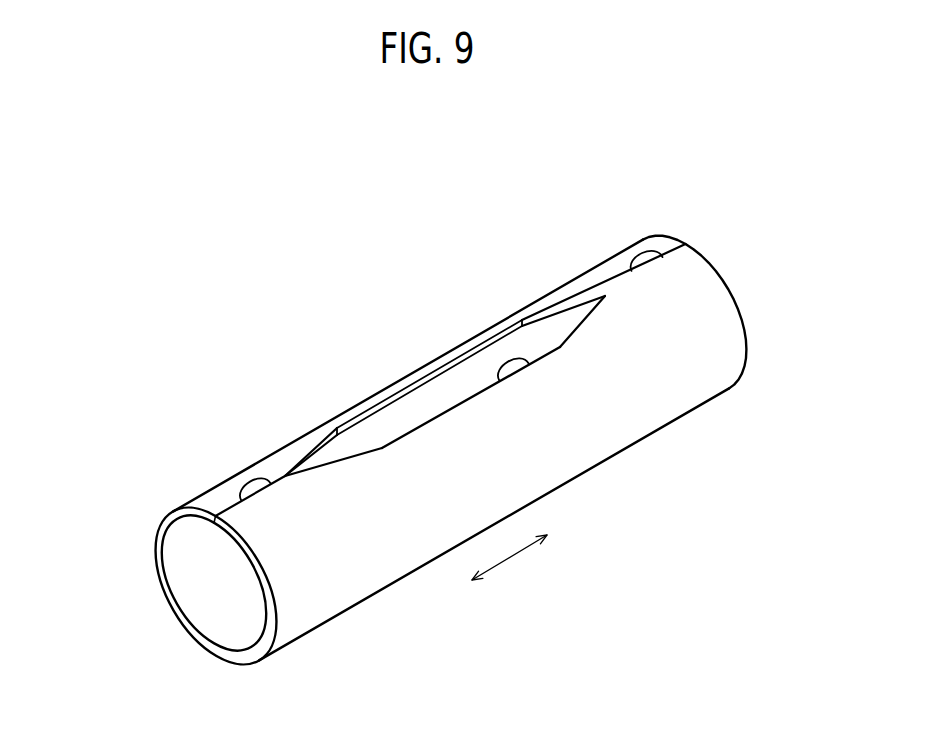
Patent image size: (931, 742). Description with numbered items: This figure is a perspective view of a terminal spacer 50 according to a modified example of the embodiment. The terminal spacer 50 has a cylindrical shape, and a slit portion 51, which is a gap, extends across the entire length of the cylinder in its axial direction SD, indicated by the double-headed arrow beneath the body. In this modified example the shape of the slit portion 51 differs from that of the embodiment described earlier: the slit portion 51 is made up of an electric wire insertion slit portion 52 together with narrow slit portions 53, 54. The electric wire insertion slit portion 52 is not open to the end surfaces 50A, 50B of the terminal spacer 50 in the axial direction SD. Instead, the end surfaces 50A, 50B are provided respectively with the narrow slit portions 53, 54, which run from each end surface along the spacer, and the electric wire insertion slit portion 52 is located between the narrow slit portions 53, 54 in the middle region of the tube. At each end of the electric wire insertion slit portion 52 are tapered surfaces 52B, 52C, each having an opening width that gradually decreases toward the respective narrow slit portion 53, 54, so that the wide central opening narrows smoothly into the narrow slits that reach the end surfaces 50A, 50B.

The terminal spacer 50 is at (437, 444).
The end surface 50A is at (153, 554).
The end surface 50B is at (735, 274).
The slit portion 51 is at (417, 421).
The electric wire insertion slit portion 52 is at (530, 364).
The tapered surface 52B is at (323, 438).
The tapered surface 52C is at (561, 308).
The narrow slit portion 53 is at (663, 257).
The narrow slit portion 54 is at (272, 484).
The axial direction SD is at (509, 562).